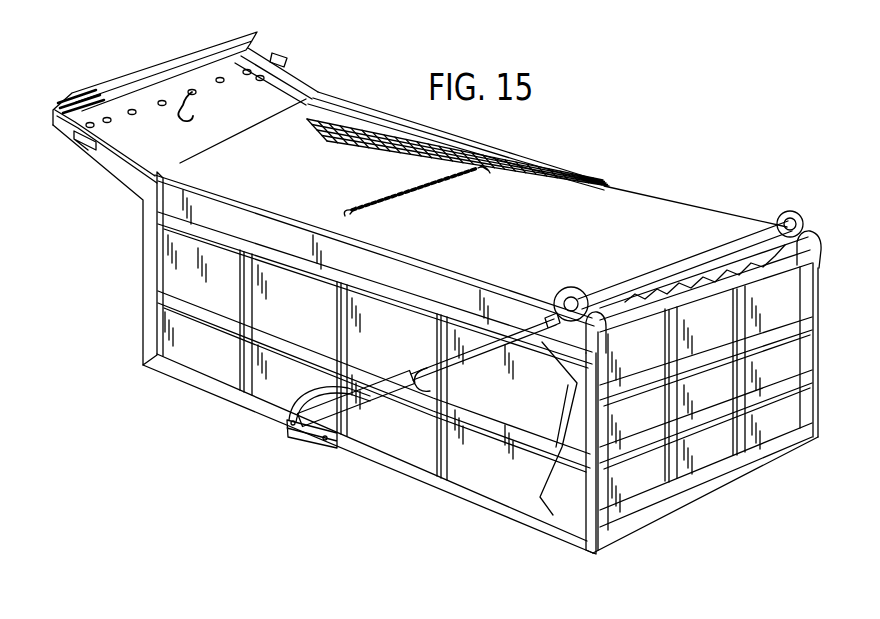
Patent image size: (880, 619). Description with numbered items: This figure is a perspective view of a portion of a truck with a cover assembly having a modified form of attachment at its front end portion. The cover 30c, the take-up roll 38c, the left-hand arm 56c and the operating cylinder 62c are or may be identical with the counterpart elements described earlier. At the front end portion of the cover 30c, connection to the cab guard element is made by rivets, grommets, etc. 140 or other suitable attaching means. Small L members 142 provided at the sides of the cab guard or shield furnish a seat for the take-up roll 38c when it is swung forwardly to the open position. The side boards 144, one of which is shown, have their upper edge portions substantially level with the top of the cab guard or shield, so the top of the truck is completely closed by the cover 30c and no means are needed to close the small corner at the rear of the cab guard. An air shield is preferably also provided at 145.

The air shield 145 is at (172, 60).
The small L member 142 is at (72, 139).
The rivets, grommets, etc. 140 is at (200, 107).
The side board 144 is at (176, 198).
The cover 30c is at (538, 185).
The take-up roll 38c is at (733, 243).
The left-hand arm 56c is at (478, 368).
The operating cylinder 62c is at (357, 398).